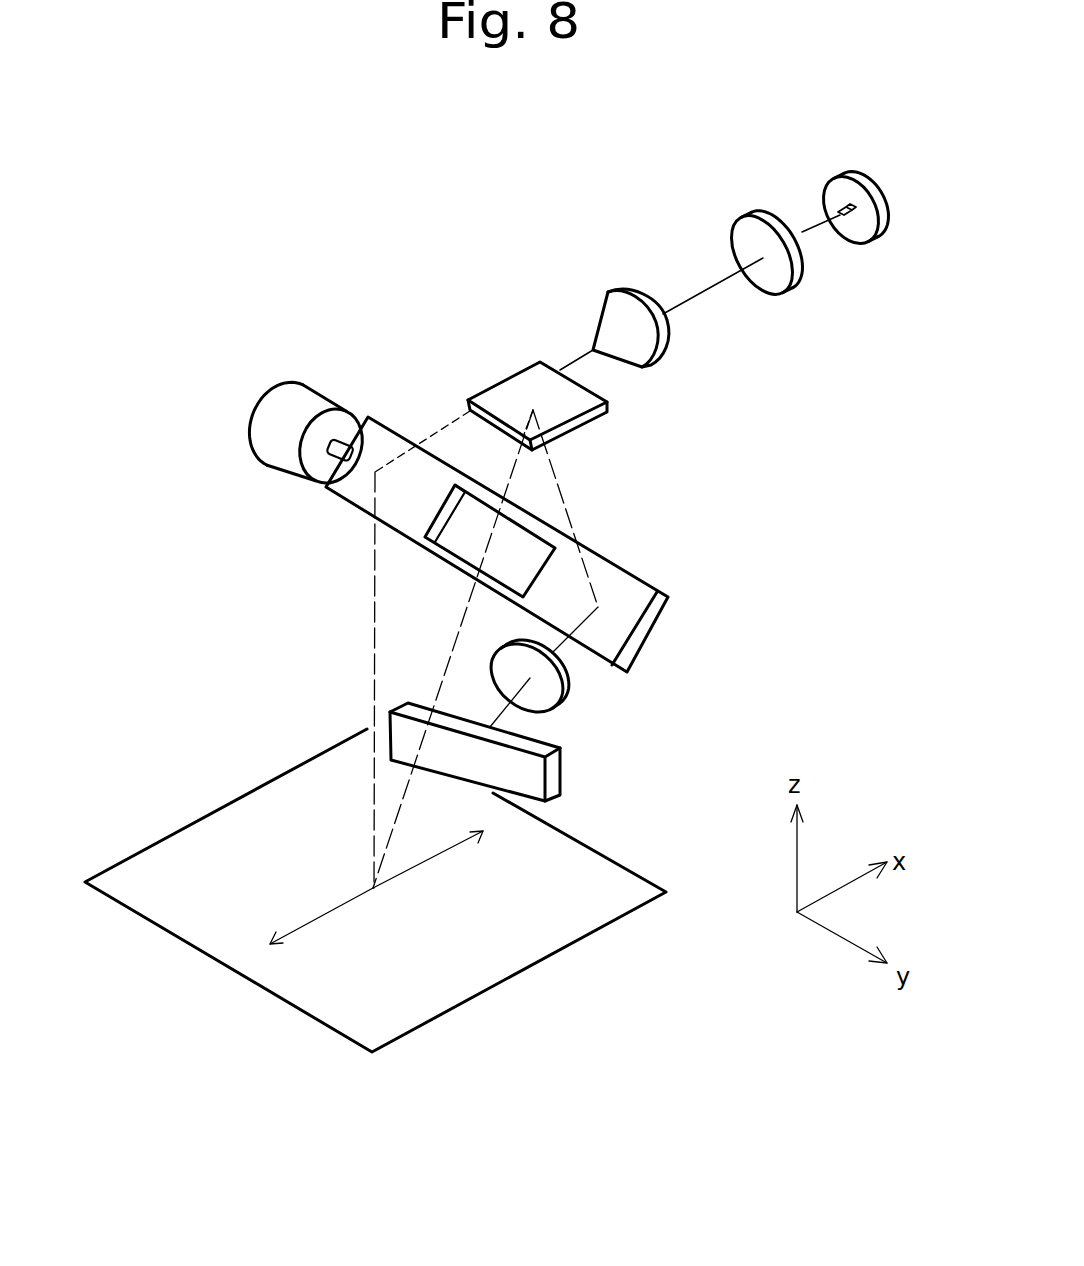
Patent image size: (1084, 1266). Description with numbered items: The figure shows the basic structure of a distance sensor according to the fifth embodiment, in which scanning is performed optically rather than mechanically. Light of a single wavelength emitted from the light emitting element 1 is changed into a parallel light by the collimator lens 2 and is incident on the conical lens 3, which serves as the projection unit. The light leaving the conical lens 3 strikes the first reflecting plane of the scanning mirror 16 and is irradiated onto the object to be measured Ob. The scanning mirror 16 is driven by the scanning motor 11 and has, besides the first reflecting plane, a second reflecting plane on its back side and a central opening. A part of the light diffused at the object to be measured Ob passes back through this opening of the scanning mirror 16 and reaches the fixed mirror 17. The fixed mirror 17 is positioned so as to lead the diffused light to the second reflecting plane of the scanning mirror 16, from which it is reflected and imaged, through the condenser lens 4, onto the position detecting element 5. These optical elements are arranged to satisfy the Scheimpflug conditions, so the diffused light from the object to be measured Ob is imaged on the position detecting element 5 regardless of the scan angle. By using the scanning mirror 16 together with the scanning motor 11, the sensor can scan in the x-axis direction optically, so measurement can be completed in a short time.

The light emitting element 1 is at (868, 178).
The collimator lens 2 is at (776, 213).
The conical lens 3 is at (642, 286).
The fixed mirror 17 is at (508, 378).
The scanning motor 11 is at (320, 380).
The scanning mirror 16 is at (640, 580).
The condenser lens 4 is at (573, 682).
The position detecting element 5 is at (562, 771).
The object to be measured Ob is at (450, 1017).